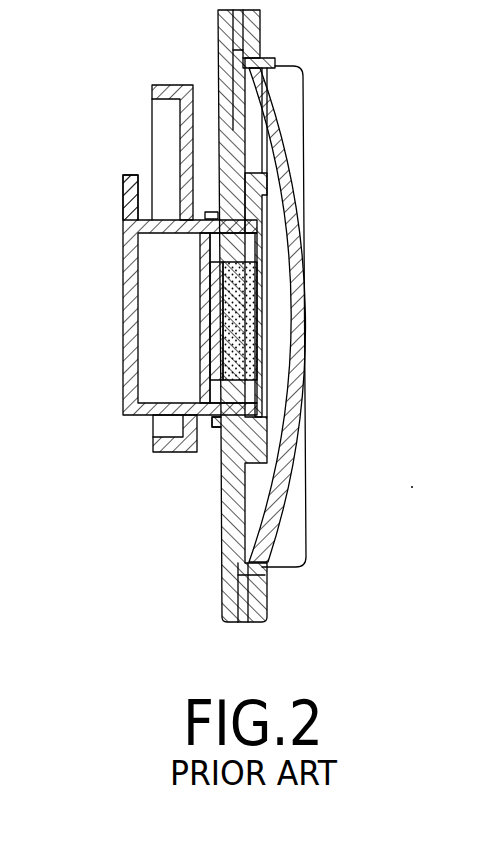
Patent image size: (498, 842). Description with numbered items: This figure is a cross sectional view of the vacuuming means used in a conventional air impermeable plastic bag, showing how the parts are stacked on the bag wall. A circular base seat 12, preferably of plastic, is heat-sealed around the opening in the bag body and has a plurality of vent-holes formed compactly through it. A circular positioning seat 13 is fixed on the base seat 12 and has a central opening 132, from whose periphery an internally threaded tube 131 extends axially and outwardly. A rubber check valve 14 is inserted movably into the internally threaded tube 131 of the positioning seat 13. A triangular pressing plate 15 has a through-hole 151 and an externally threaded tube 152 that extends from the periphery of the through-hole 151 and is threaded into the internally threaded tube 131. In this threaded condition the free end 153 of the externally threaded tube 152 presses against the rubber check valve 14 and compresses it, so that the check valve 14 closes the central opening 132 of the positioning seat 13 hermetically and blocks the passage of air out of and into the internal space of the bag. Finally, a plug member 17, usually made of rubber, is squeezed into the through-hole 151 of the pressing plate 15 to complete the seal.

The circular base seat 12 is at (285, 484).
The circular positioning seat 13 is at (268, 193).
The internally threaded tube 131 is at (260, 323).
The central opening 132 is at (216, 440).
The rubber check valve 14 is at (255, 278).
The triangular pressing plate 15 is at (170, 95).
The through-hole 151 is at (200, 384).
The externally threaded tube 152 is at (143, 217).
The free end 153 is at (200, 330).
The plug member 17 is at (132, 353).